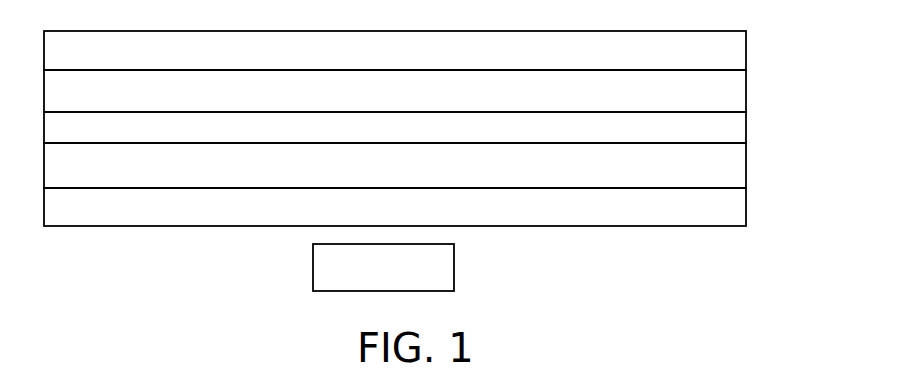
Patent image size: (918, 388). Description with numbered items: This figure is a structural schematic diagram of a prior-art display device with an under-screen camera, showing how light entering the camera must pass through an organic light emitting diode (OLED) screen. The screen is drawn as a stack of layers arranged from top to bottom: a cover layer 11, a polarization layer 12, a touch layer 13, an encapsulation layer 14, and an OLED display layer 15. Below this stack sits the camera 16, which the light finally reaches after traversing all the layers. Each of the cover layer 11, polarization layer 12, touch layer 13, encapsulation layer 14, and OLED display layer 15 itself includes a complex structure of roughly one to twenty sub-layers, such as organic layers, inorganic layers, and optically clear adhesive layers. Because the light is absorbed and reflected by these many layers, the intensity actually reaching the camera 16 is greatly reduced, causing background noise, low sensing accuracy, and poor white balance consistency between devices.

The cover layer 11 is at (728, 62).
The polarization layer 12 is at (726, 107).
The touch layer 13 is at (730, 135).
The encapsulation layer 14 is at (727, 175).
The OLED display layer 15 is at (728, 207).
The camera 16 is at (438, 278).